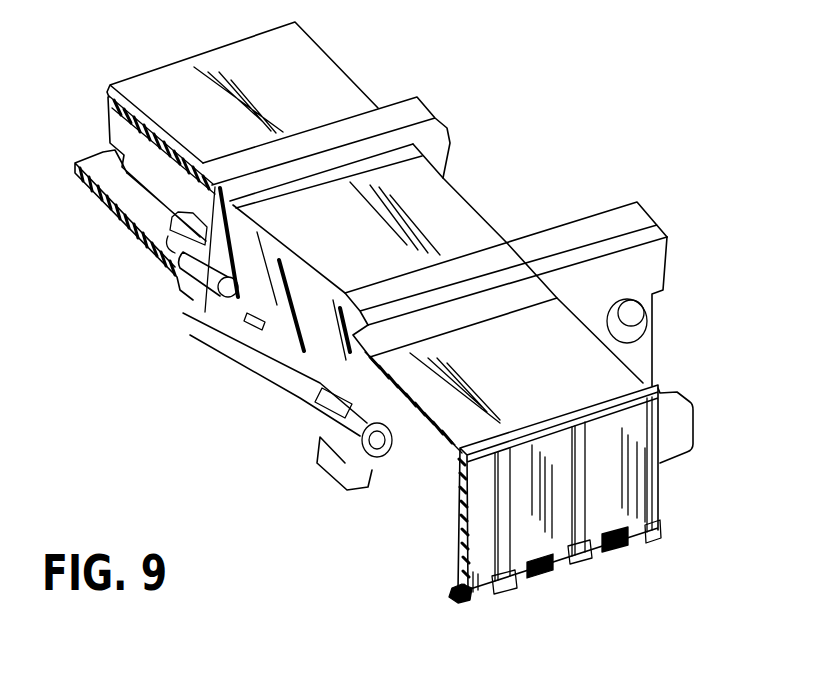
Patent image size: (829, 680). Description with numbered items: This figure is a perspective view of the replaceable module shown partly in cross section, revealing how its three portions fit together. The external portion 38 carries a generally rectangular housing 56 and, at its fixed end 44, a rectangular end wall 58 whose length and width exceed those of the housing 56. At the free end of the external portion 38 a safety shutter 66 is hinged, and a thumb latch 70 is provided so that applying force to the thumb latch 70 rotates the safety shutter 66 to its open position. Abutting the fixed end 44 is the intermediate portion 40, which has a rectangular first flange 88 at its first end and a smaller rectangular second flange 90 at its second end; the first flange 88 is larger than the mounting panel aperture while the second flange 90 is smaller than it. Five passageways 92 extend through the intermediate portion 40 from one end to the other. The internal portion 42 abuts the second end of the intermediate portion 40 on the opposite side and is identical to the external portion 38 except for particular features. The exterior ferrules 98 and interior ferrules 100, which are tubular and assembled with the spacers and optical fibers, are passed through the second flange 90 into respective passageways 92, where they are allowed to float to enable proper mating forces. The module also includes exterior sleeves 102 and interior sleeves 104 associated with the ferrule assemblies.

The external portion 38 is at (673, 335).
The intermediate portion 40 is at (495, 197).
The internal portion 42 is at (348, 45).
The fixed end 44 is at (424, 98).
The housing 56 is at (610, 380).
The end wall 58 is at (655, 230).
The safety shutter 66 is at (613, 478).
The thumb latch 70 is at (683, 425).
The first flange 88 is at (640, 208).
The second flange 90 is at (437, 118).
The passageways 92 is at (317, 340).
The exterior ferrules 98 is at (317, 400).
The interior ferrules 100 is at (200, 312).
The exterior sleeves 102 is at (347, 487).
The interior sleeves 104 is at (177, 278).